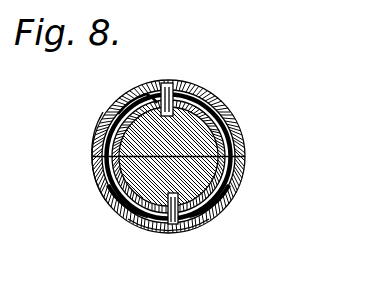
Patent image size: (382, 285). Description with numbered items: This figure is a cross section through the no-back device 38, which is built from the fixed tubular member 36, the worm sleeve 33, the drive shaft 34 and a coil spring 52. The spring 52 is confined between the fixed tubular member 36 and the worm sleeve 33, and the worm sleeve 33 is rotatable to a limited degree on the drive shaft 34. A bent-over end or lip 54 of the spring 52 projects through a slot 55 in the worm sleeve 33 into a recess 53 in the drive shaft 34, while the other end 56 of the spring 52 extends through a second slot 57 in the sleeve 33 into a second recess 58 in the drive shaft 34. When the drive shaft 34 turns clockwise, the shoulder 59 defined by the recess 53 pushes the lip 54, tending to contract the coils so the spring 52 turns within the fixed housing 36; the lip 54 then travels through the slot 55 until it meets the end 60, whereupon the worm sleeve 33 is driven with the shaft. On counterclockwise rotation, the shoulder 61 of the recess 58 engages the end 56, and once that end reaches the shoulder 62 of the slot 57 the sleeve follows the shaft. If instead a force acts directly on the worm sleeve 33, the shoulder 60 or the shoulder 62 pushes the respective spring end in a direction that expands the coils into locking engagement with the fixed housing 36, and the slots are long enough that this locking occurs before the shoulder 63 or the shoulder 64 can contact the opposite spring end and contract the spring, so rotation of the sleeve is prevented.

The worm sleeve 33 is at (207, 96).
The drive shaft 34 is at (215, 113).
The fixed tubular member 36 is at (96, 127).
The no-back device 38 is at (94, 185).
The spring 52 is at (133, 87).
The recess 53 is at (183, 98).
The bent-over end or lip 54 is at (168, 98).
The slot 55 is at (163, 97).
The other end 56 is at (174, 226).
The slot 57 is at (166, 218).
The recess 58 is at (179, 198).
The shoulder 59 is at (125, 110).
The end of the slot 60 is at (175, 97).
The shoulder 61 is at (127, 215).
The shoulder 62 is at (196, 226).
The shoulder 63 is at (157, 228).
The shoulder 64 is at (152, 96).